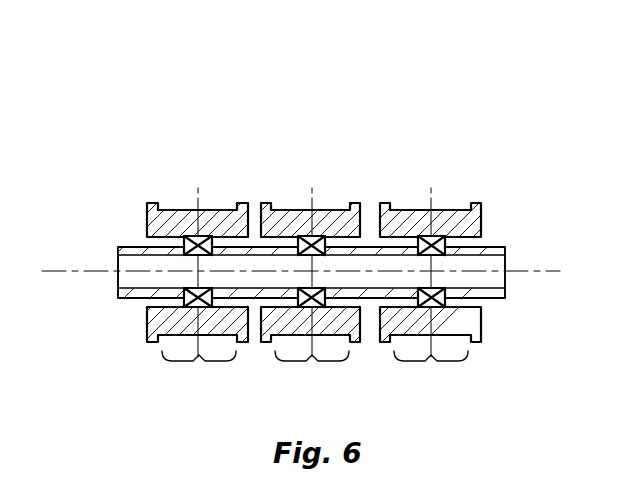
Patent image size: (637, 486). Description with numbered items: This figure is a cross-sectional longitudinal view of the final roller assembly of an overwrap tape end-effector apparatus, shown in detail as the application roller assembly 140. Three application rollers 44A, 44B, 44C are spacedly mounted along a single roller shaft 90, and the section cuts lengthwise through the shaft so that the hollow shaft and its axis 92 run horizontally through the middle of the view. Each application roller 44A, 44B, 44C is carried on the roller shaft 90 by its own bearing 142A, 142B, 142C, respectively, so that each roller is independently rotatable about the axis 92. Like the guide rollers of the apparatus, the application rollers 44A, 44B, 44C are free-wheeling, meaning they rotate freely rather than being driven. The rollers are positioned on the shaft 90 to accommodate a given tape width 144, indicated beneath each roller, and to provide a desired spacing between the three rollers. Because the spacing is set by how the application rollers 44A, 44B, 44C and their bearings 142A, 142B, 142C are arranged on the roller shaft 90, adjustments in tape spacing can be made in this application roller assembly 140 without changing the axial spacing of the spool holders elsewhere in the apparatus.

The application roller assembly 140 is at (77, 105).
The axis 92 is at (66, 270).
The roller shaft 90 is at (118, 295).
The application roller 44A is at (147, 335).
The application roller 44B is at (348, 325).
The application roller 44C is at (468, 321).
The bearing 142A is at (200, 237).
The bearing 142B is at (313, 237).
The bearing 142C is at (432, 237).
The tape width 144 is at (315, 370).